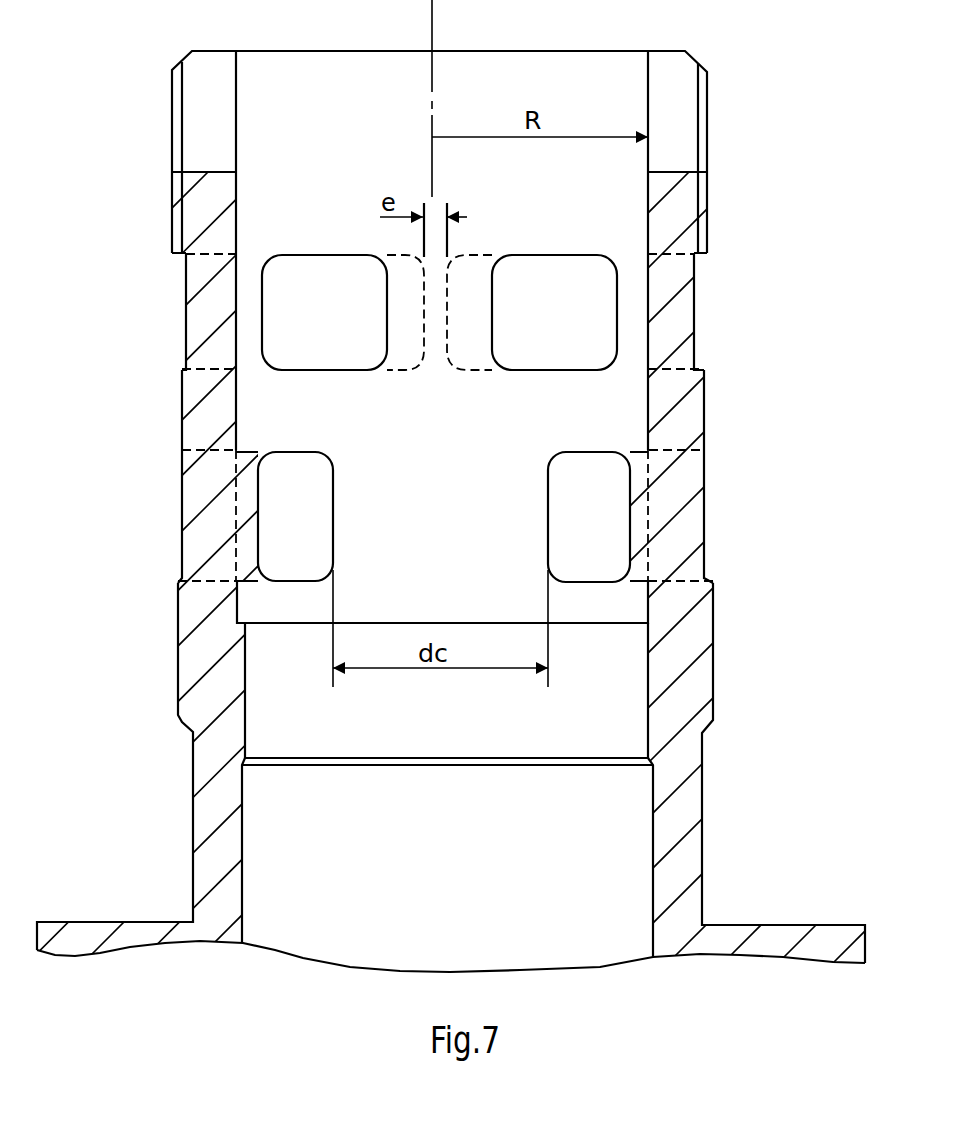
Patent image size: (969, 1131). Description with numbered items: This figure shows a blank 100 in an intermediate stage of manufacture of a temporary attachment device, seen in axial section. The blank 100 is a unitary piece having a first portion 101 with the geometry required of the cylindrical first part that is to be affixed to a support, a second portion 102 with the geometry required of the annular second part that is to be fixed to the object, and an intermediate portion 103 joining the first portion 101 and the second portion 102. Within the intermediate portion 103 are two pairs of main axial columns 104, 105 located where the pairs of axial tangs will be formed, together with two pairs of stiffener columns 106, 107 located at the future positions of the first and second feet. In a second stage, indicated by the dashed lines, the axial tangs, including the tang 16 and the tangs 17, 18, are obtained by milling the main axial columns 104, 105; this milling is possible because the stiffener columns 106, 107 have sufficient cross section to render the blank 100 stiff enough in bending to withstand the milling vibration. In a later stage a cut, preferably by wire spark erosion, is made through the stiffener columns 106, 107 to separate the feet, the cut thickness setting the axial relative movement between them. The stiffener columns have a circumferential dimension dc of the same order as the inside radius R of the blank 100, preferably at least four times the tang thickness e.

The blank 100 is at (772, 119).
The first portion 101 is at (715, 683).
The second portion 102 is at (707, 198).
The intermediate portion 103 is at (732, 418).
The main axial columns 104 is at (495, 313).
The main axial columns 105 is at (182, 500).
The stiffener columns 106 is at (186, 321).
The stiffener columns 107 is at (548, 512).
The axial tang 16 is at (448, 307).
The axial tang 17 is at (238, 498).
The axial tang 18 is at (650, 492).